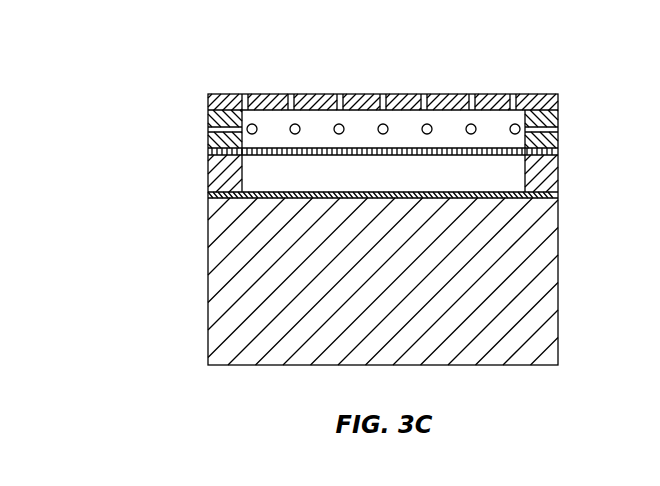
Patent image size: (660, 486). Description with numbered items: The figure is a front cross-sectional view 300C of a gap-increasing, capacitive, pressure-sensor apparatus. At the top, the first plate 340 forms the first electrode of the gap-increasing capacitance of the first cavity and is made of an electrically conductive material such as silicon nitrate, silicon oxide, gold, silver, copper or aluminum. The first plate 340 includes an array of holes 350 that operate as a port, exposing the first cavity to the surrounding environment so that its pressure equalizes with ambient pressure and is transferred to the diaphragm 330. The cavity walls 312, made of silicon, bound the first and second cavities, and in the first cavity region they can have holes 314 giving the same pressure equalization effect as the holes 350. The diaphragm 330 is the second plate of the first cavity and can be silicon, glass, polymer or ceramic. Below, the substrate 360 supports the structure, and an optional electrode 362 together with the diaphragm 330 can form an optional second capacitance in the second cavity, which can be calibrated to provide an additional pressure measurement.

The front cross-sectional view 300C is at (126, 60).
The holes 314 is at (251, 94).
The array of holes 350 is at (423, 94).
The first plate 340 is at (545, 94).
The diaphragm 330 is at (558, 152).
The cavity walls 312 is at (372, 184).
The optional electrode 362 is at (208, 194).
The substrate 360 is at (370, 290).